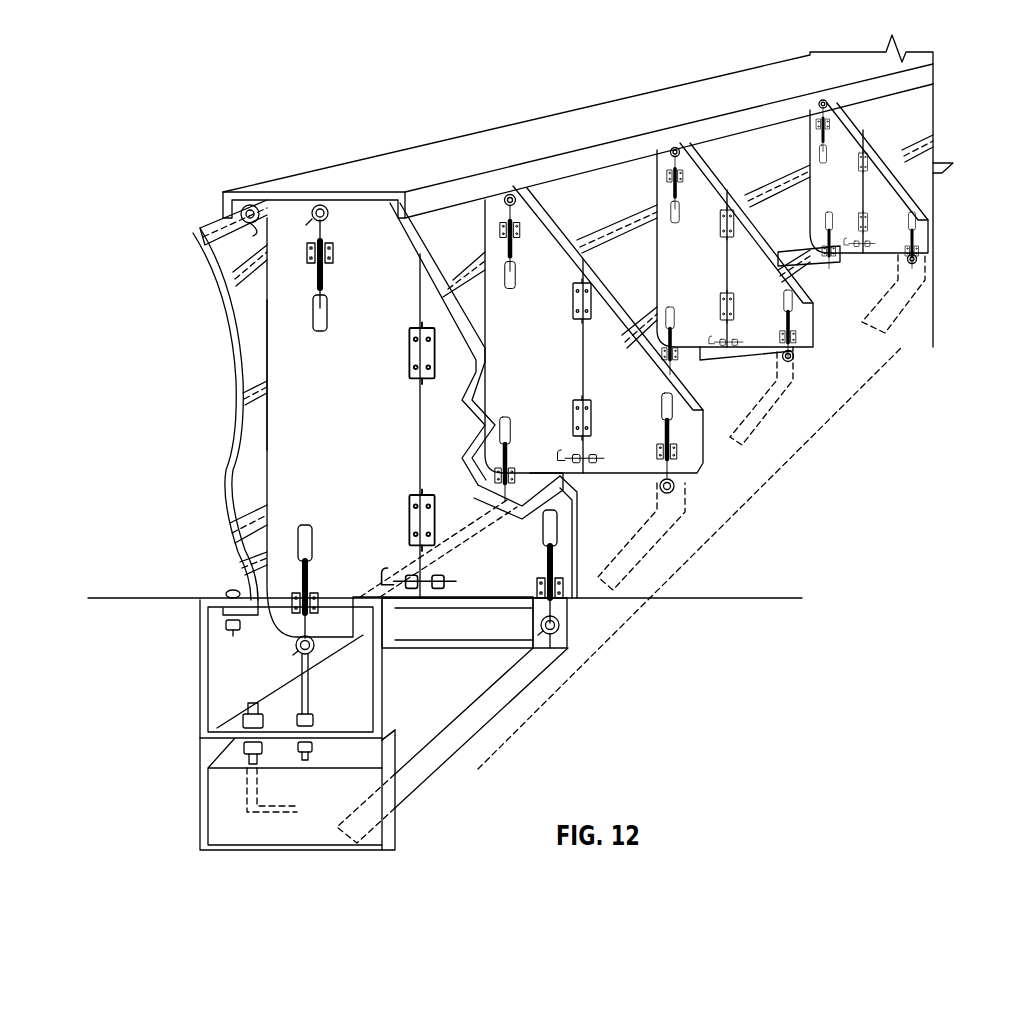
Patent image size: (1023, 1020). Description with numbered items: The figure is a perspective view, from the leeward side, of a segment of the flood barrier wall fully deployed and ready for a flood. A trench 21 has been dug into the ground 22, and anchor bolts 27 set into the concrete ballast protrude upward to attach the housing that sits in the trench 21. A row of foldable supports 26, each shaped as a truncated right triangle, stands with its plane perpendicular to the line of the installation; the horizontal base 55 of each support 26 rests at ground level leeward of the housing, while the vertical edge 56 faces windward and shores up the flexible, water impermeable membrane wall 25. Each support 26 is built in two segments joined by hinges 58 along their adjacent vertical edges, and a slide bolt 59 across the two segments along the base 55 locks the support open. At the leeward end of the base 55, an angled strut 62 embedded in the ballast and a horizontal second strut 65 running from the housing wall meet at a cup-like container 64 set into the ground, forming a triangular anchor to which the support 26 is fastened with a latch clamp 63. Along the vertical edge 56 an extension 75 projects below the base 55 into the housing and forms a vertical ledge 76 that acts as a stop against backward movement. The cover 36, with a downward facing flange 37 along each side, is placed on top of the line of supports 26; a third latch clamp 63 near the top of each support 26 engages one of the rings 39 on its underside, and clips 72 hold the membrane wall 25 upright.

The trench 21 is at (198, 760).
The ground 22 is at (445, 621).
The membrane wall 25 is at (232, 308).
The foldable supports 26 is at (960, 188).
The anchor bolts 27 is at (275, 818).
The cover 36 is at (385, 172).
The downward facing flange 37 is at (218, 207).
The rings 39 is at (332, 213).
The base 55 is at (477, 597).
The vertical edge 56 is at (268, 422).
The hinges 58 is at (410, 370).
The slide bolt 59 is at (565, 457).
The strut 62 is at (497, 697).
The latch clamp 63 is at (330, 282).
The container 64 is at (565, 638).
The second strut 65 is at (758, 345).
The clips 72 is at (213, 243).
The extension 75 is at (320, 629).
The vertical ledge 76 is at (355, 632).